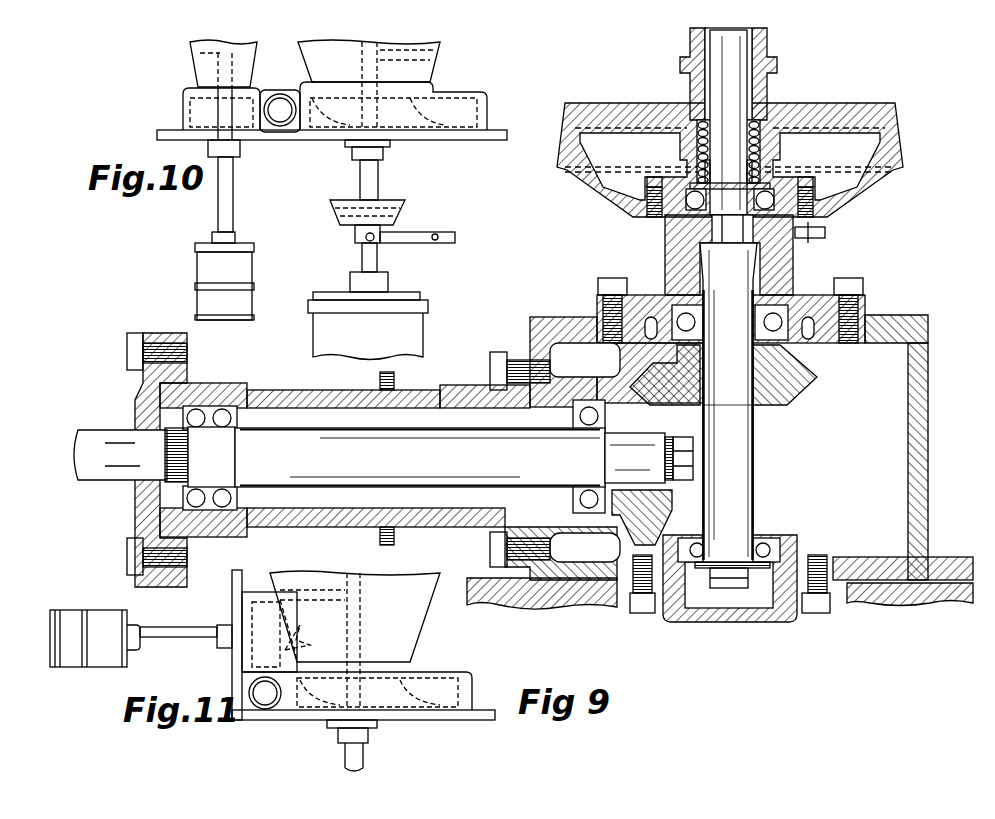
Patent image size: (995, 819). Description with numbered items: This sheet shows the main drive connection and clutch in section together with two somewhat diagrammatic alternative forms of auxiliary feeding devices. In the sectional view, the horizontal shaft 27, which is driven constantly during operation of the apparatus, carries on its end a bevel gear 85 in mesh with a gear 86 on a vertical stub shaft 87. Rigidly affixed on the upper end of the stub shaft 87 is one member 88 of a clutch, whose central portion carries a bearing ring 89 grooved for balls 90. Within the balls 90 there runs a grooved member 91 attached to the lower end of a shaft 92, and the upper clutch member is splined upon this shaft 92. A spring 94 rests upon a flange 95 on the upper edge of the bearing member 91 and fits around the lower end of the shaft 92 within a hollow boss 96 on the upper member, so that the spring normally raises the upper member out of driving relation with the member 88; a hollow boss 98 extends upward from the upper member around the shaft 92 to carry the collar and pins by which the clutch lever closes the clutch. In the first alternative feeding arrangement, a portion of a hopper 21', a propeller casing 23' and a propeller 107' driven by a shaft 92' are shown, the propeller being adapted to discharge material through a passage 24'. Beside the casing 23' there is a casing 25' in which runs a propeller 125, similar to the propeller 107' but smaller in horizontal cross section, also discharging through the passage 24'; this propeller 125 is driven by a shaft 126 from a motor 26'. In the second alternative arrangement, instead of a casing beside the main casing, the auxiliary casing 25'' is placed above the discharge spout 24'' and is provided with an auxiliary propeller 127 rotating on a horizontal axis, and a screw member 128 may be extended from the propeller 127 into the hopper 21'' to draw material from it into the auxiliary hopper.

In FIG. 10, the casing 25' is at (197, 108).
In FIG. 10, the propeller 125 is at (188, 114).
In FIG. 10, the passage 24' is at (280, 129).
In FIG. 10, the shaft 126 is at (245, 194).
In FIG. 10, the motor 26' is at (244, 281).
In FIG. 10, the hopper 21' is at (388, 61).
In FIG. 10, the propeller casing 23' is at (413, 106).
In FIG. 10, the propeller 107' is at (390, 132).
In FIG. 10, the shaft 92' is at (393, 180).
In FIG. 11, the auxiliary casing 25'' is at (357, 628).
In FIG. 11, the auxiliary propeller 127 is at (241, 604).
In FIG. 11, the screw member 128 is at (286, 647).
In FIG. 11, the hopper 21'' is at (370, 616).
In FIG. 11, the discharge spout 24'' is at (260, 716).
In FIG. 9, the hollow boss 98 is at (768, 52).
In FIG. 9, the shaft 92 is at (762, 122).
In FIG. 9, the hollow boss 96 is at (770, 128).
In FIG. 9, the spring 94 is at (765, 152).
In FIG. 9, the flange 95 is at (772, 177).
In FIG. 9, the clutch member 88 is at (852, 185).
In FIG. 9, the bearing ring 89 is at (800, 210).
In FIG. 9, the balls 90 is at (688, 203).
In FIG. 9, the grooved member 91 is at (700, 228).
In FIG. 9, the gear 86 is at (805, 385).
In FIG. 9, the vertical stub shaft 87 is at (743, 440).
In FIG. 9, the bevel gear 85 is at (665, 527).
In FIG. 9, the horizontal shaft 27 is at (96, 482).